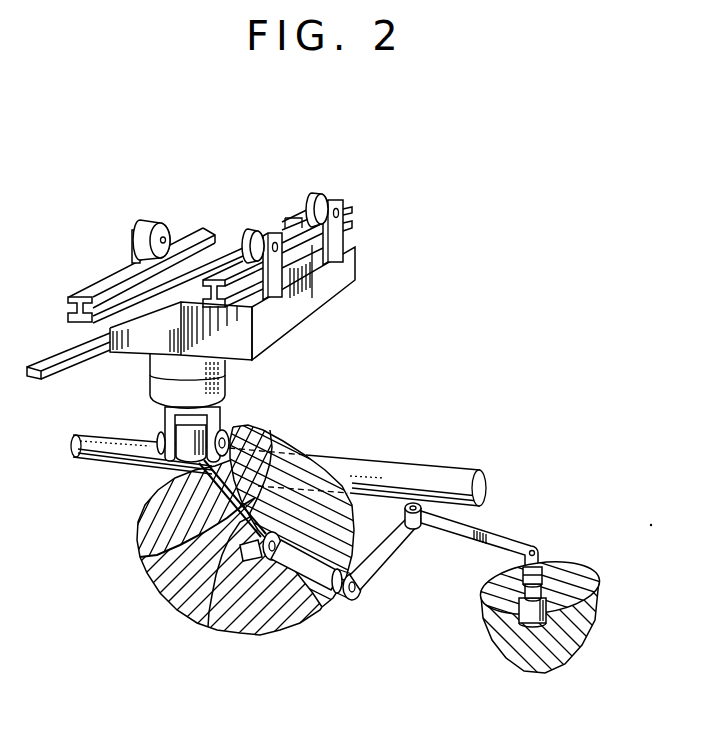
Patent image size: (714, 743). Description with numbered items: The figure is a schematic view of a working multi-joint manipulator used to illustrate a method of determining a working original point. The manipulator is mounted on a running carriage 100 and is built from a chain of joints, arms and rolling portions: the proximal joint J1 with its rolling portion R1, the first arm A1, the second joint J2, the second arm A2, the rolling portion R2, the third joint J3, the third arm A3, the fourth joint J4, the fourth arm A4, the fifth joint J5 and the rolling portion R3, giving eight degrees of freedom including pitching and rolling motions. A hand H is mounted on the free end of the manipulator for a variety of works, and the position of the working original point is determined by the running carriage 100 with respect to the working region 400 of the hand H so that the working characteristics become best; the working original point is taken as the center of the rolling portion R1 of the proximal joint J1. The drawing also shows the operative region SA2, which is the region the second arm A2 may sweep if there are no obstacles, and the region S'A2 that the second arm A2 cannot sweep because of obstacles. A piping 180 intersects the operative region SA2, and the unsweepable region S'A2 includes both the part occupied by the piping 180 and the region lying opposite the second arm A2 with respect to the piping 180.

The carriage 100 is at (353, 262).
The rolling portion R1 is at (157, 387).
The proximal joint J1 is at (221, 431).
The region that the second arm cannot sweep S'A2 is at (290, 529).
The piping 180 is at (413, 463).
The fourth arm A4 is at (493, 530).
The fifth joint J5 is at (537, 552).
The rolling portion R3 is at (560, 573).
The hand H is at (570, 657).
The working region 400 is at (520, 663).
The operative region SA2 is at (175, 583).
The first arm A1 is at (237, 527).
The second joint J2 is at (271, 562).
The second arm A2 is at (315, 573).
The rolling portion R2 is at (341, 588).
The third joint J3 is at (357, 597).
The third arm A3 is at (392, 558).
The fourth joint J4 is at (417, 525).